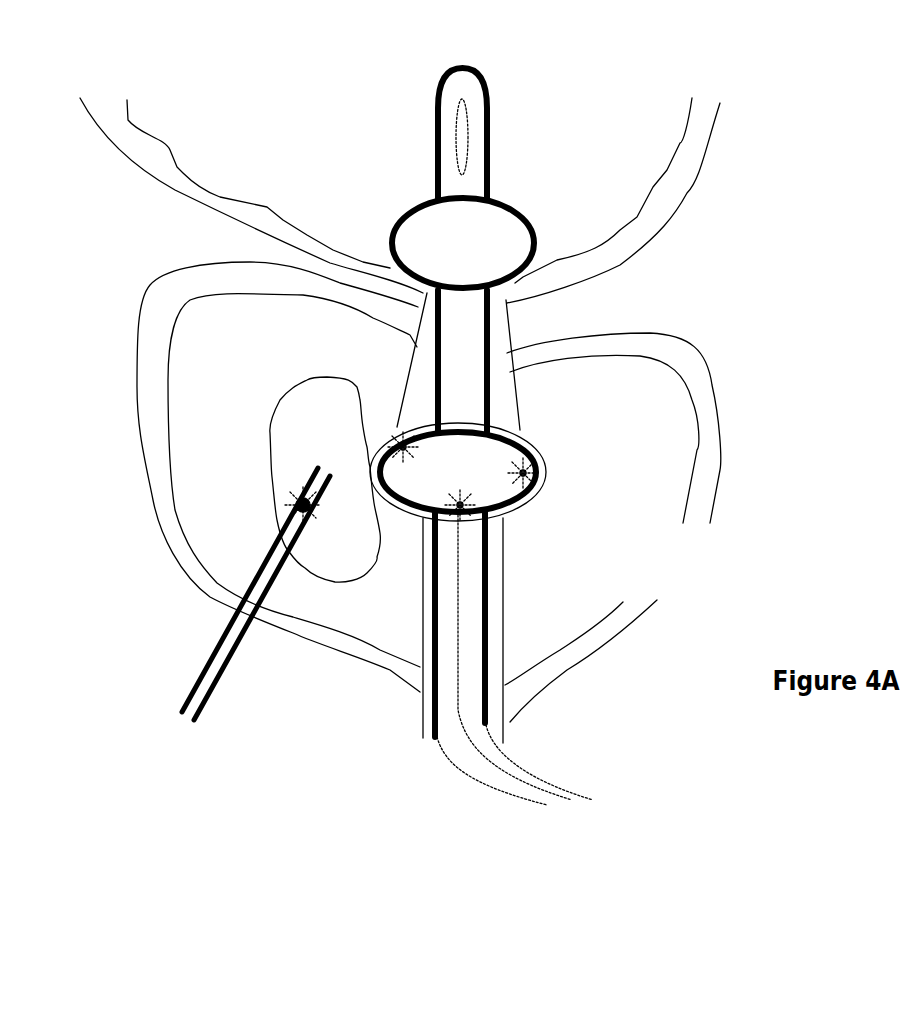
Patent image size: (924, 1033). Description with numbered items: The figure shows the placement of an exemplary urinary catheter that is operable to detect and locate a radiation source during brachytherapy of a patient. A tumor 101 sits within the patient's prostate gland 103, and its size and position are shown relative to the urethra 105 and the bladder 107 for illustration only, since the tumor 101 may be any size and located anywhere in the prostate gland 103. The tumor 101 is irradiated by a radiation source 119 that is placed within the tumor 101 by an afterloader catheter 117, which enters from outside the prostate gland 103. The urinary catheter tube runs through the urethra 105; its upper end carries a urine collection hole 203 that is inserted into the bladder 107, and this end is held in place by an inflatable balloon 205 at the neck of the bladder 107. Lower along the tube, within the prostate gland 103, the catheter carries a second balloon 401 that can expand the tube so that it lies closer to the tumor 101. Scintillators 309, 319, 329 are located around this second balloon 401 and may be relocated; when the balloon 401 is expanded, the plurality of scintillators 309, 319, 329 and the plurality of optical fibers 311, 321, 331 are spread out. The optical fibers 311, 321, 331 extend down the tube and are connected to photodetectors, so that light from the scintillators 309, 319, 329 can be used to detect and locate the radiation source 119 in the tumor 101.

The tumor 101 is at (325, 479).
The prostate gland 103 is at (429, 492).
The urethra 105 is at (499, 342).
The bladder 107 is at (400, 200).
The afterloader catheter 117 is at (205, 664).
The radiation source 119 is at (308, 530).
The urine collection hole 203 is at (454, 137).
The inflatable balloon 205 is at (392, 260).
The scintillator 309 is at (432, 456).
The scintillator 319 is at (572, 489).
The scintillator 329 is at (492, 531).
The optical fiber 311 is at (600, 799).
The optical fiber 321 is at (515, 657).
The optical fiber 331 is at (539, 762).
The second balloon 401 is at (492, 440).